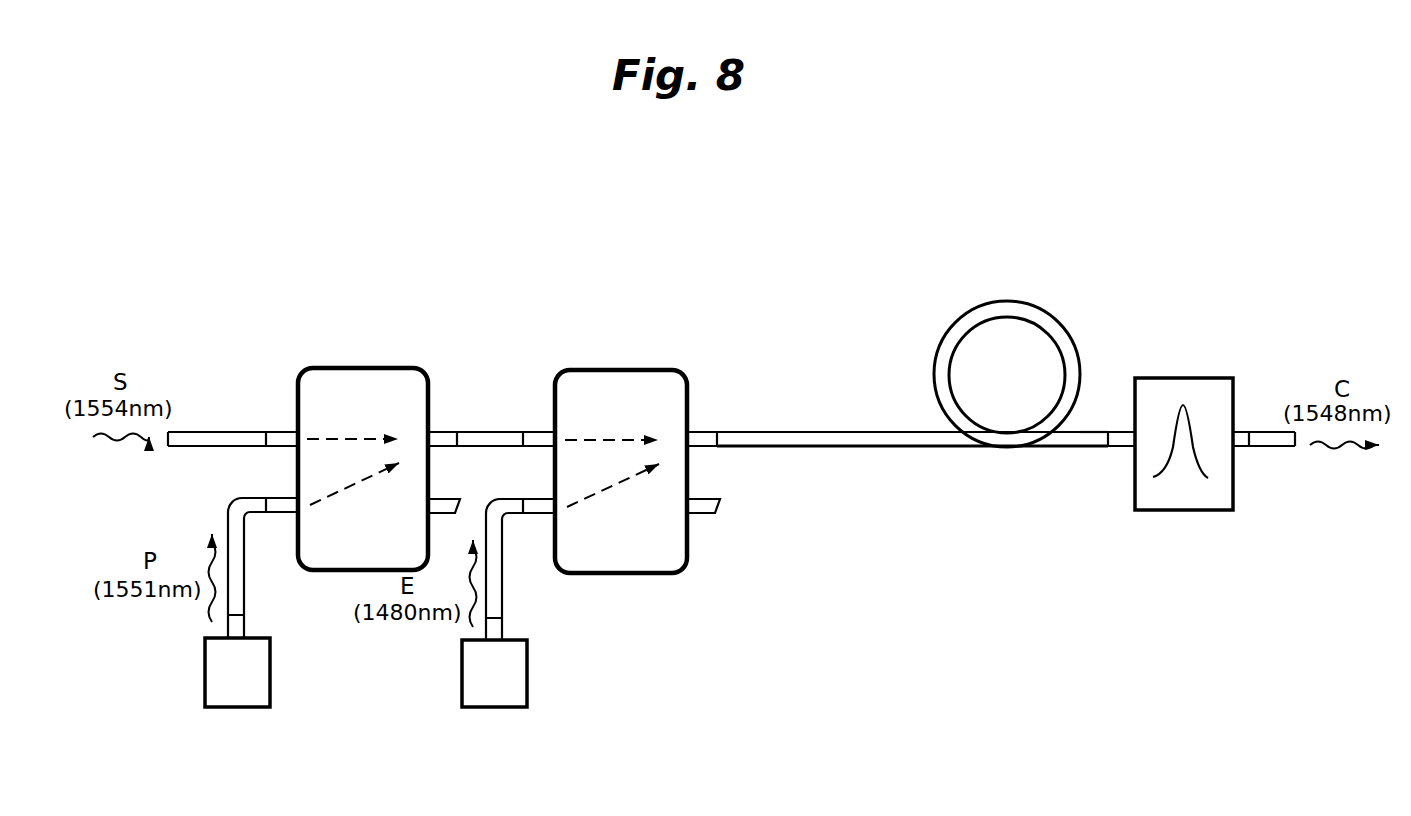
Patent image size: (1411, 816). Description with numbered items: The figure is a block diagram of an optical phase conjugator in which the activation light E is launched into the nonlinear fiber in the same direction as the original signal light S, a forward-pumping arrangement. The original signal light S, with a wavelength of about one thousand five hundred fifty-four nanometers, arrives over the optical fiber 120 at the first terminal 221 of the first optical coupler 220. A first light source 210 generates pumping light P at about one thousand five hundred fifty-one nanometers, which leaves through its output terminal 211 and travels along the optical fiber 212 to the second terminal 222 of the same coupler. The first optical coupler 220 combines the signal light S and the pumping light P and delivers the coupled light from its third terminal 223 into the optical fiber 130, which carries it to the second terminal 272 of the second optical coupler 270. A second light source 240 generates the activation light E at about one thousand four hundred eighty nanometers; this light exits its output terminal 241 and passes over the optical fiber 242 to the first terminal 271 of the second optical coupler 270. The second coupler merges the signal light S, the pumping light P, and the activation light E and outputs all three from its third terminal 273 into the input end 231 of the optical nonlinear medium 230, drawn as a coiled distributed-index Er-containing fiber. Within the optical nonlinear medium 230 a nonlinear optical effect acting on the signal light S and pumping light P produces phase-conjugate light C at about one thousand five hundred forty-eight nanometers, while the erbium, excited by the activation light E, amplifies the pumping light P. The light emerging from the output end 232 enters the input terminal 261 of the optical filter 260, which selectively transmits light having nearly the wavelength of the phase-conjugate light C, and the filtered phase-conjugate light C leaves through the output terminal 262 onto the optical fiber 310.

The optical fiber 120 is at (217, 432).
The first terminal 221 is at (279, 432).
The first optical coupler 220 is at (340, 385).
The second terminal 222 is at (280, 497).
The third terminal 223 is at (442, 432).
The optical fiber 212 is at (246, 594).
The output terminal 211 is at (246, 624).
The first light source 210 is at (258, 688).
The optical fiber 130 is at (483, 437).
The second terminal 272 is at (543, 432).
The second optical coupler 270 is at (628, 388).
The first terminal 271 is at (540, 507).
The third terminal 273 is at (702, 437).
The optical fiber 242 is at (503, 590).
The output terminal 241 is at (503, 625).
The second light source 240 is at (517, 690).
The input end 231 is at (733, 440).
The optical nonlinear medium 230 is at (1015, 310).
The output end 232 is at (1097, 450).
The input terminal 261 is at (1120, 432).
The optical filter 260 is at (1182, 390).
The output terminal 262 is at (1240, 450).
The optical fiber 310 is at (1270, 432).